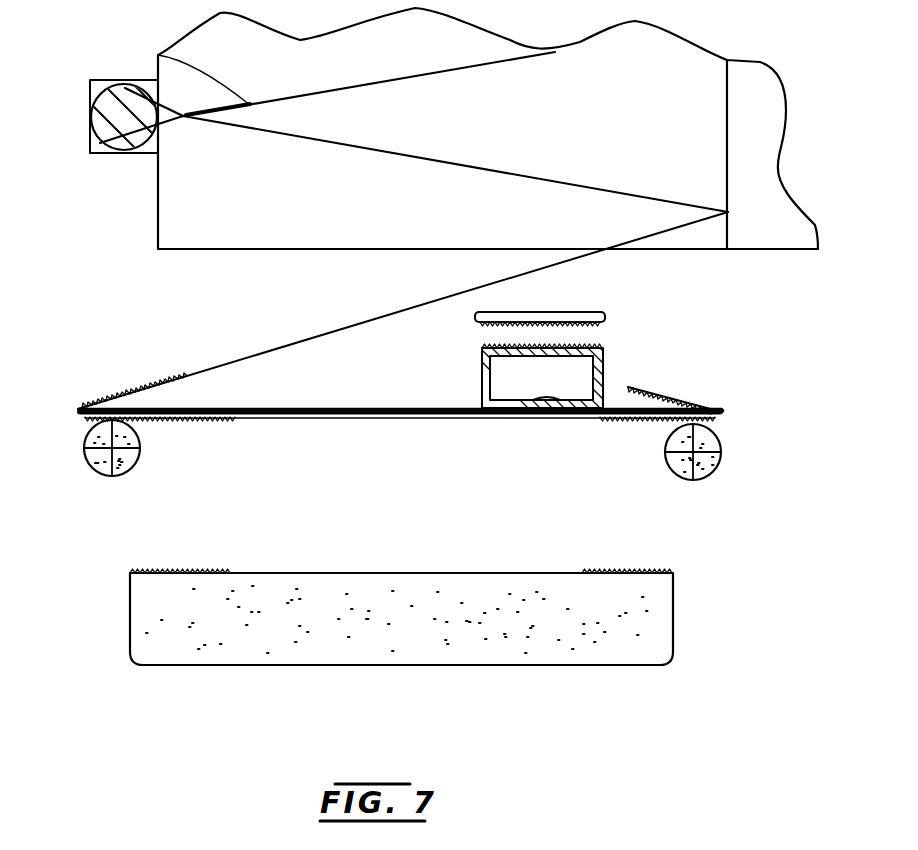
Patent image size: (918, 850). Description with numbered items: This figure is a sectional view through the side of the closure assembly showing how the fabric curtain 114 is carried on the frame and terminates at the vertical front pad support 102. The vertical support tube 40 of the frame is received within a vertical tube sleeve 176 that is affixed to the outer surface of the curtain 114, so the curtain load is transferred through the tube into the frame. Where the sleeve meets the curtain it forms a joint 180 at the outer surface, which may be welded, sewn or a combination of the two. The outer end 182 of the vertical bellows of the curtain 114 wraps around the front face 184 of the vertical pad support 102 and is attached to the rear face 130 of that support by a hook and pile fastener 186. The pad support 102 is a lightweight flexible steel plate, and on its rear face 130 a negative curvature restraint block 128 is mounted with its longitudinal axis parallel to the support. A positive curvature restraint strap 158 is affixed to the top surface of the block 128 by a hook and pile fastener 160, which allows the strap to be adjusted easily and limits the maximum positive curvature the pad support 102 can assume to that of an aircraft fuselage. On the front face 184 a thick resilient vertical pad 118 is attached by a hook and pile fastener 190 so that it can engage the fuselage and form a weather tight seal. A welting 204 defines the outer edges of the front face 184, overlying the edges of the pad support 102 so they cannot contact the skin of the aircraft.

The fabric curtain 114 is at (160, 53).
The vertical support tube 40 is at (113, 118).
The vertical tube sleeve 176 is at (100, 143).
The joint 180 is at (208, 123).
The outer end of vertical bellows 182 is at (298, 345).
The positive curvature restraint strap 158 is at (604, 318).
The hook and pile fastener 160 is at (592, 346).
The negative curvature restraint block 128 is at (604, 356).
The rear face of vertical pad support 130 is at (343, 409).
The front face of vertical pad support 184 is at (350, 418).
The vertical front pad support 102 is at (456, 420).
The hook and pile fastener 186 is at (705, 408).
The welting 204 is at (96, 444).
The hook and pile fastener 190 is at (144, 572).
The vertical pad 118 is at (288, 650).